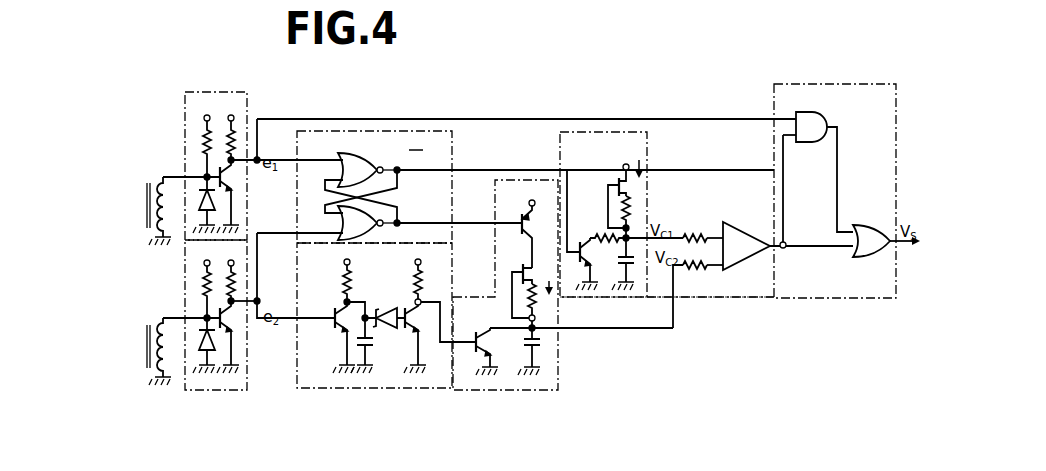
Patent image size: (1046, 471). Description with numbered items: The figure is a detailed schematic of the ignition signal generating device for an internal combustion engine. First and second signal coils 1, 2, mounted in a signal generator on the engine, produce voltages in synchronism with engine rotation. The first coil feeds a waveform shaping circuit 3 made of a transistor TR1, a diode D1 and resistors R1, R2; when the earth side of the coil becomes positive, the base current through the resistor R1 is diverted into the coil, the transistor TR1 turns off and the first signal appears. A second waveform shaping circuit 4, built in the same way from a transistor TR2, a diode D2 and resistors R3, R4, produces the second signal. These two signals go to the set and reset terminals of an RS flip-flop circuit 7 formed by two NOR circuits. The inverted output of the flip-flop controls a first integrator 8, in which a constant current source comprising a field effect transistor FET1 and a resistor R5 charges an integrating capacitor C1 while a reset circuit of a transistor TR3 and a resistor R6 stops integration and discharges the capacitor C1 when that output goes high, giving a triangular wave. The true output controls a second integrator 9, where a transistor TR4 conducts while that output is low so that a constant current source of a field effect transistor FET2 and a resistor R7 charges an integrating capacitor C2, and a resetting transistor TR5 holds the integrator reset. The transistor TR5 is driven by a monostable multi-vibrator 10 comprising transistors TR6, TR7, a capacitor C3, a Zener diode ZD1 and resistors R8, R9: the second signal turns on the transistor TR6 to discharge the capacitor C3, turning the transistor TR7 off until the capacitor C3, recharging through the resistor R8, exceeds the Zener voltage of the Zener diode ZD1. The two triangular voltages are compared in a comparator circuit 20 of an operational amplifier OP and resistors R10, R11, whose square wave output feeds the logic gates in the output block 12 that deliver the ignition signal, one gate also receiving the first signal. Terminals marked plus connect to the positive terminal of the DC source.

The first signal coil 1 is at (152, 182).
The second signal coil 2 is at (155, 382).
The waveform shaping circuit 3 is at (212, 92).
The waveform shaping circuit 4 is at (227, 390).
The RS flip-flop circuit 7 is at (368, 131).
The first integrator 8 is at (613, 132).
The second integrator 9 is at (480, 391).
The monostable multi-vibrator 10 is at (328, 389).
The output logic circuit 12 is at (829, 84).
The comparator circuit 20 is at (742, 299).
The resistor R1 is at (203, 138).
The resistor R2 is at (237, 140).
The resistor R3 is at (203, 282).
The resistor R4 is at (238, 288).
The resistor R5 is at (630, 212).
The resistor R6 is at (607, 233).
The resistor R7 is at (527, 297).
The resistor R8 is at (343, 287).
The resistor R9 is at (425, 286).
The resistor R10 is at (692, 232).
The resistor R11 is at (697, 271).
The transistor TR1 is at (233, 178).
The transistor TR2 is at (233, 322).
The transistor TR3 is at (592, 259).
The transistor TR4 is at (521, 215).
The resetting transistor TR5 is at (481, 337).
The transistor TR6 is at (343, 330).
The transistor TR7 is at (423, 320).
The diode D1 is at (200, 212).
The diode D2 is at (200, 353).
The Zener diode ZD1 is at (390, 308).
The integrating capacitor C1 is at (633, 265).
The integrating capacitor C2 is at (541, 343).
The capacitor C3 is at (371, 344).
The field effect transistor FET1 is at (617, 180).
The field effect transistor FET2 is at (517, 268).
The operational amplifier OP is at (746, 230).